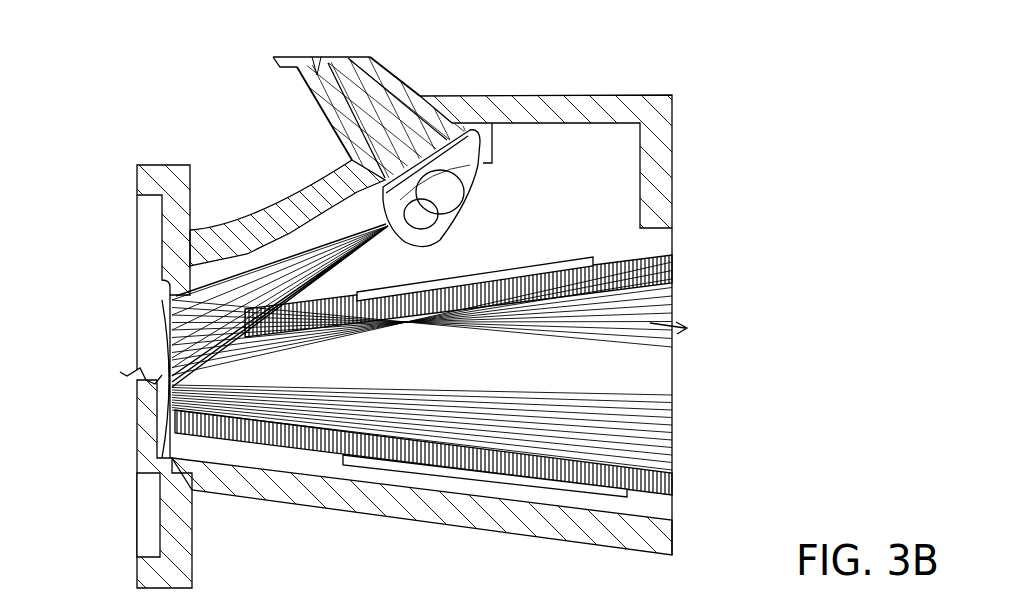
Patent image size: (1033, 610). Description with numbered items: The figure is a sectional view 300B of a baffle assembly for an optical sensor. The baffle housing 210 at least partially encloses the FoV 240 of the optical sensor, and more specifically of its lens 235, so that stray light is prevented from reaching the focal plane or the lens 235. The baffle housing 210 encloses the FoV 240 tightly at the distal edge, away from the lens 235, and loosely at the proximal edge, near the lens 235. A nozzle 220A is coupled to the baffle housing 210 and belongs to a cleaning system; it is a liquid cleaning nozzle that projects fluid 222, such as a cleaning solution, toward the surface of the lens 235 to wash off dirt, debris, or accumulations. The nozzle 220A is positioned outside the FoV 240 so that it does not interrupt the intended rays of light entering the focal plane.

The sectional view 300B is at (170, 95).
The baffle housing 210 is at (673, 152).
The nozzle 220A is at (343, 36).
The fluid 222 is at (300, 209).
The lens 235 is at (134, 428).
The FoV 240 is at (693, 253).